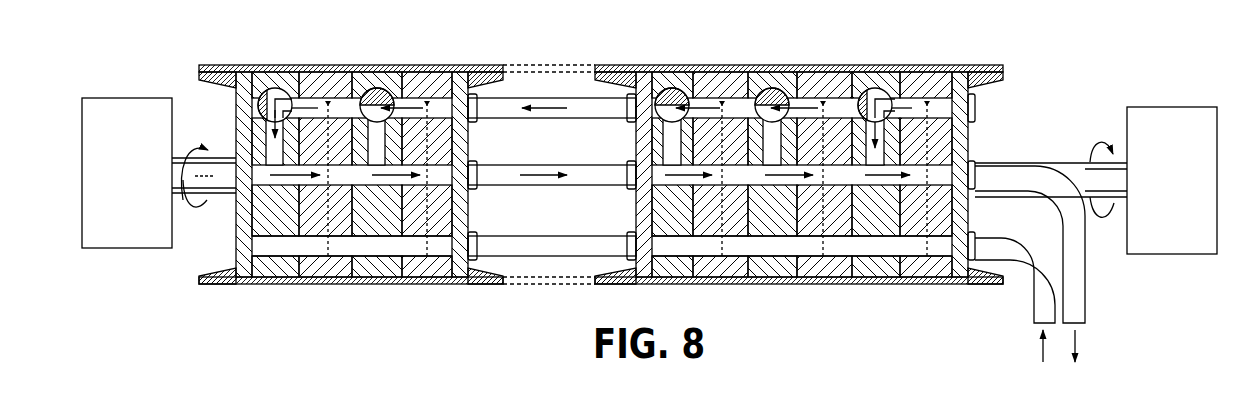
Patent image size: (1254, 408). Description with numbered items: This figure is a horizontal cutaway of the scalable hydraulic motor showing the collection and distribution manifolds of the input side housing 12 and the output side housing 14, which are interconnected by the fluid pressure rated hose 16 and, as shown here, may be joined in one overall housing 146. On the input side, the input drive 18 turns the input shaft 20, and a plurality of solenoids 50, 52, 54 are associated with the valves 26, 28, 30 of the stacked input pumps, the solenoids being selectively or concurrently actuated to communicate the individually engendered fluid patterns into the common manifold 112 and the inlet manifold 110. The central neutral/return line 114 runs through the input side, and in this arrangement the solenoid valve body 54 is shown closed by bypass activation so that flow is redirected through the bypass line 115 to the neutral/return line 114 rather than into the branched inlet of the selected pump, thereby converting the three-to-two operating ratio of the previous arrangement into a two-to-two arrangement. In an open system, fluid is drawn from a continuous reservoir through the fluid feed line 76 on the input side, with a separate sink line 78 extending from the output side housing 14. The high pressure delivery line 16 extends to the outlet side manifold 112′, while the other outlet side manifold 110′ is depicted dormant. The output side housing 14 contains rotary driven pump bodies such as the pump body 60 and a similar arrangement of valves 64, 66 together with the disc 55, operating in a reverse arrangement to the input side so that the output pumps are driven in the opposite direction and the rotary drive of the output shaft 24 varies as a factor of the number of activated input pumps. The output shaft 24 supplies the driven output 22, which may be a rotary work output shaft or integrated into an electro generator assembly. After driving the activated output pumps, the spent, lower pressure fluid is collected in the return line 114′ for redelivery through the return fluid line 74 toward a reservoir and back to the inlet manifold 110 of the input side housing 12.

The input side housing 12 is at (923, 287).
The output side housing 14 is at (230, 285).
The fluid pressure rated hose 16 is at (546, 96).
The input drive 18 is at (1170, 114).
The input shaft 20 is at (1048, 162).
The driven output 22 is at (121, 110).
The output shaft 24 is at (216, 158).
The valve 26 is at (724, 74).
The valve 28 is at (834, 74).
The valve 30 is at (930, 84).
The solenoid 50 is at (667, 76).
The solenoid 52 is at (780, 80).
The solenoid valve body 54 is at (866, 78).
The disc 55 is at (433, 270).
The rotary driven pump body 60 is at (318, 268).
The valve 64 is at (387, 268).
The valve 66 is at (271, 272).
The return fluid line 74 is at (507, 187).
The fluid feed line 76 is at (1040, 334).
The sink line 78 is at (1082, 334).
The inlet manifold 110 is at (773, 248).
The outlet side manifold 110′ is at (366, 250).
The manifold 112 is at (732, 101).
The outlet side manifold 112′ is at (338, 100).
The neutral/return line 114 is at (832, 180).
The return line 114′ is at (237, 203).
The bypass line 115 is at (880, 147).
The overall housing 146 is at (525, 65).